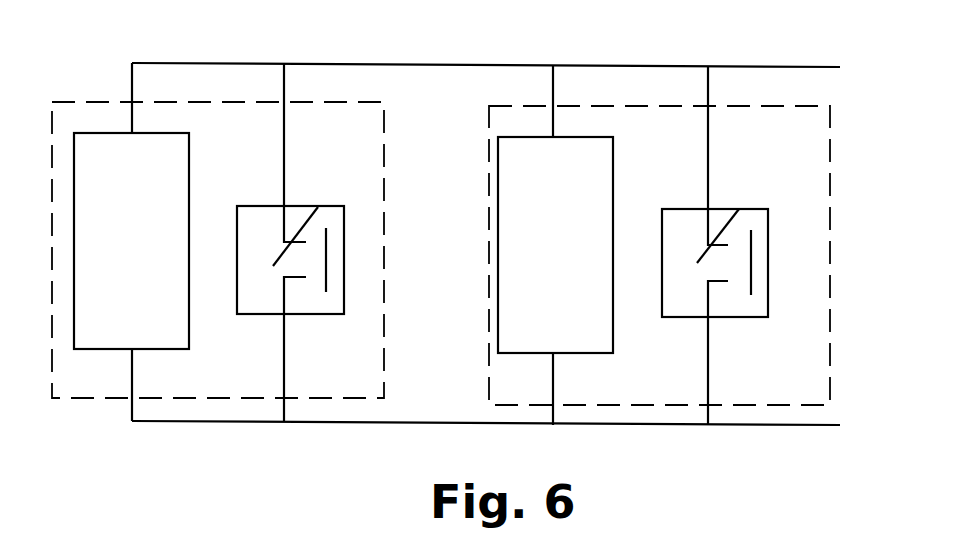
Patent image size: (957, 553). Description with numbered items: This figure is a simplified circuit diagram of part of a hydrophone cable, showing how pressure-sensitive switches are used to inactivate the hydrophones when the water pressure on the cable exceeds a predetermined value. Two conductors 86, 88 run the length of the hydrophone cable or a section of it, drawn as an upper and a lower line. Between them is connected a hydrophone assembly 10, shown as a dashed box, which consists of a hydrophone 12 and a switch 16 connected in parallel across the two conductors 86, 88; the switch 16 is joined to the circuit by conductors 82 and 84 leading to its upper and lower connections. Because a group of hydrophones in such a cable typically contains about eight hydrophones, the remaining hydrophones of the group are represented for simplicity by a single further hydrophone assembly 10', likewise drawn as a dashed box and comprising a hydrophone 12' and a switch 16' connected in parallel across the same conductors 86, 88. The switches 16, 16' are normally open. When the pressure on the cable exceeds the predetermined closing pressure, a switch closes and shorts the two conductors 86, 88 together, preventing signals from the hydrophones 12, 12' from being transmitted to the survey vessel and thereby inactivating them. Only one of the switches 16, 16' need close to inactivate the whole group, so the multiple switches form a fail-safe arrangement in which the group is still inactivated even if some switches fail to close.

The hydrophone assembly 10 is at (218, 202).
The hydrophone assembly 10' is at (659, 208).
The hydrophone 12 is at (131, 242).
The hydrophone 12' is at (555, 245).
The switch 16 is at (309, 225).
The switch 16' is at (745, 245).
The conductor 82 is at (284, 119).
The conductor 84 is at (284, 382).
The conductor 86 is at (502, 64).
The conductor 88 is at (502, 425).